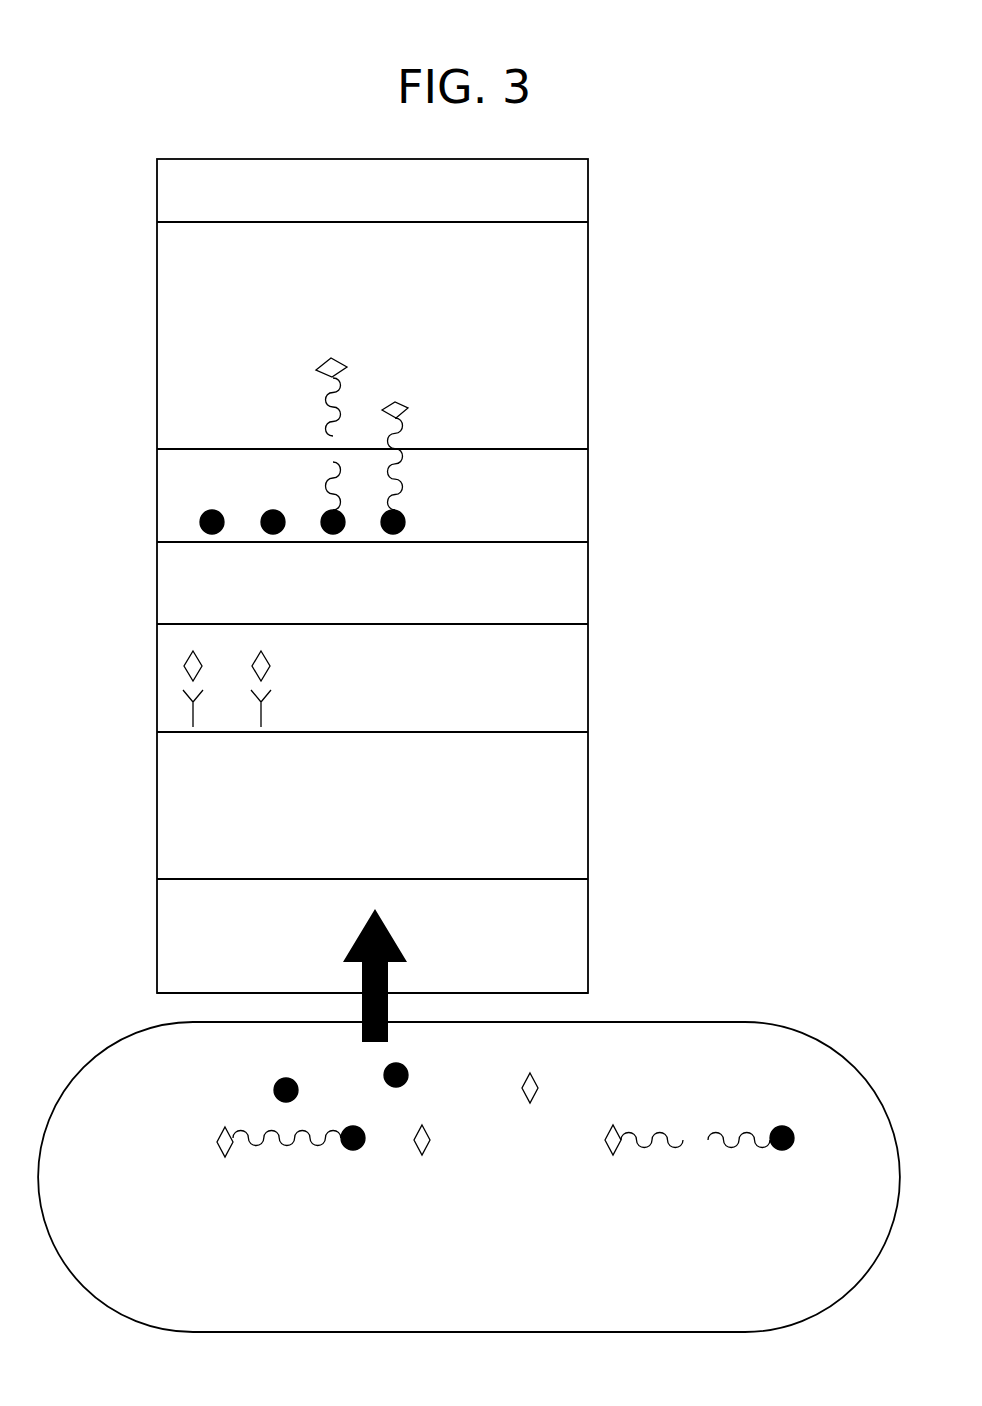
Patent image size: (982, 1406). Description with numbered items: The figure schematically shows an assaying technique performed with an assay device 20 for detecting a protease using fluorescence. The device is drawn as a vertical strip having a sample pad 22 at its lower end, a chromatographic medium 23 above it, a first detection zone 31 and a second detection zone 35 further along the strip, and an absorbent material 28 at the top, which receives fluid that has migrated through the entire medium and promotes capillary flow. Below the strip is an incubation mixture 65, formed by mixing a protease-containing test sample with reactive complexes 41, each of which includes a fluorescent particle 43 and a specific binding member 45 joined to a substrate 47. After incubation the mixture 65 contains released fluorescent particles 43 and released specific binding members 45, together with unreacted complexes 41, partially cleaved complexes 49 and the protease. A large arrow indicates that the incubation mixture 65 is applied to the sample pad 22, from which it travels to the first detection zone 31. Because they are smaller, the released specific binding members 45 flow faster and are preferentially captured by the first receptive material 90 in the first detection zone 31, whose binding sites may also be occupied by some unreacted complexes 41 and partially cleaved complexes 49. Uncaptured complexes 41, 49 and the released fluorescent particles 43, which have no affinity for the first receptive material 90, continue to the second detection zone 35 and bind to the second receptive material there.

The assay device 20 is at (652, 72).
The absorbent material 28 is at (566, 201).
The second detection zone 35 is at (558, 484).
The first detection zone 31 is at (565, 699).
The chromatographic medium 23 is at (556, 840).
The sample pad 22 is at (558, 952).
The fluorescent particle 43 is at (201, 517).
The partially cleaved complex 49 is at (349, 325).
The reactive complex 41 is at (430, 380).
The specific binding member 45 is at (268, 661).
The first receptive material 90 is at (262, 712).
The substrate 47 is at (278, 1147).
The incubation mixture 65 is at (805, 1050).